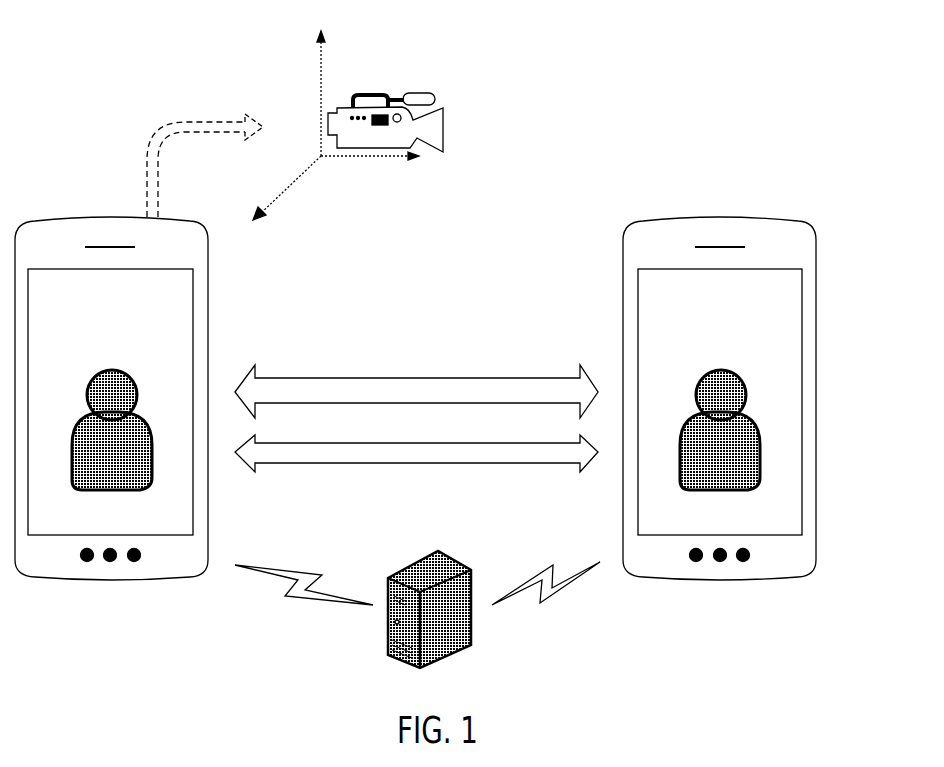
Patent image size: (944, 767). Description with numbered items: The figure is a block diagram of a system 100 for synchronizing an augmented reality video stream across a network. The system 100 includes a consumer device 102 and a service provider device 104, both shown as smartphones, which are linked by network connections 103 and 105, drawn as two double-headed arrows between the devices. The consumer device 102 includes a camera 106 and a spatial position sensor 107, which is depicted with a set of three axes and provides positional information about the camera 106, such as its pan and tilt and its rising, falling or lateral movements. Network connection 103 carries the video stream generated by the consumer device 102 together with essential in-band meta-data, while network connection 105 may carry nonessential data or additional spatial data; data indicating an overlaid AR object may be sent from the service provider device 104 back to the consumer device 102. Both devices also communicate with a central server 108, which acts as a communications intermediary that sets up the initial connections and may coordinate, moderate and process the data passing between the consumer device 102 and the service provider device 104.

The system 100 is at (116, 89).
The consumer device 102 is at (207, 340).
The network connection 103 is at (416, 391).
The service provider device 104 is at (815, 340).
The network connection 105 is at (425, 464).
The camera 106 is at (430, 94).
The spatial position sensor 107 is at (310, 205).
The central server 108 is at (469, 643).